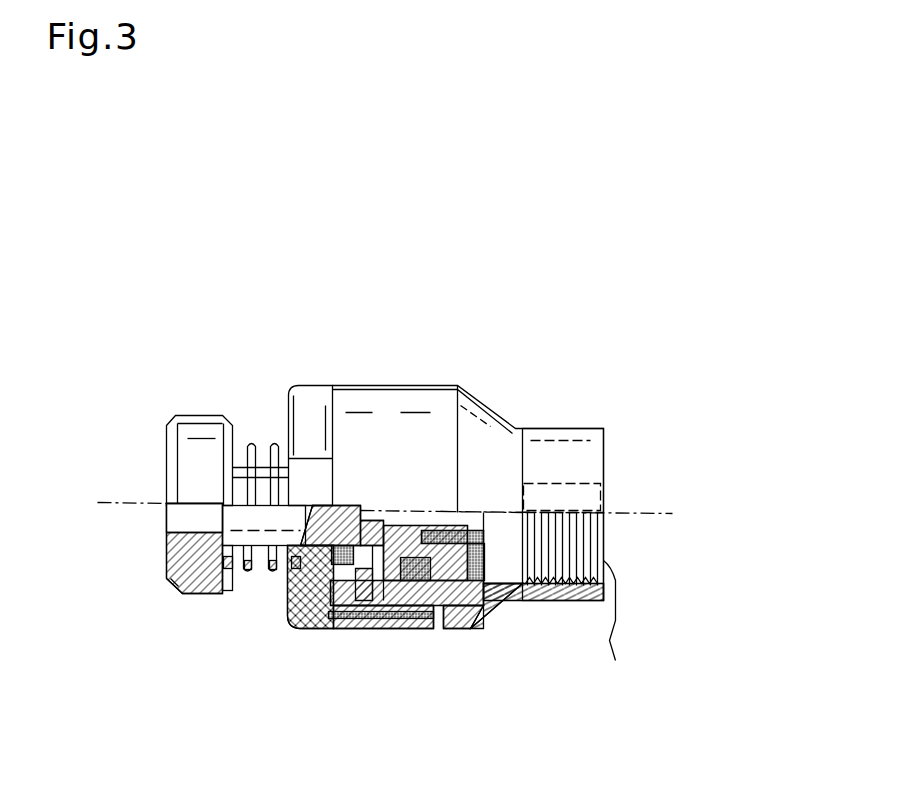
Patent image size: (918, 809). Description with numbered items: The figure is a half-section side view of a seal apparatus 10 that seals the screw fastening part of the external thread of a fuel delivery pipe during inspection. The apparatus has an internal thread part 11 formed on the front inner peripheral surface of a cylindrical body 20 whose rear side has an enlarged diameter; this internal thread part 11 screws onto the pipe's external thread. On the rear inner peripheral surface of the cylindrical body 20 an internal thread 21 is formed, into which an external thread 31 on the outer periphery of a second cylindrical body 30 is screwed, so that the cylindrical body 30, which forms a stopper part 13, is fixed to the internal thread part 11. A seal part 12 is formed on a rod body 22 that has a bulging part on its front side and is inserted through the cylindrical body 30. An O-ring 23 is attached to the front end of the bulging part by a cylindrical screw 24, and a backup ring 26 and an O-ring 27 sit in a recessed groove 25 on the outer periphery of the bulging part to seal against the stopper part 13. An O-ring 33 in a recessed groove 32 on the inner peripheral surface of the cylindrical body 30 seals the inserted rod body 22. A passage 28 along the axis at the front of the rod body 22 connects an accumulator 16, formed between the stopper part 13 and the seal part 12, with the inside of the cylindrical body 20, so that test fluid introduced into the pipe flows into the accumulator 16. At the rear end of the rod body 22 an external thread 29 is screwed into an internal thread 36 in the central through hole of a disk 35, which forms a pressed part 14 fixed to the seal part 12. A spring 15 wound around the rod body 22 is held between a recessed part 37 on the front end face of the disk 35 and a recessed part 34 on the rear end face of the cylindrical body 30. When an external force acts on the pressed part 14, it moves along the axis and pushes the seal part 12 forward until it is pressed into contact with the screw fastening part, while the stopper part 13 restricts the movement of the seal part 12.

The seal apparatus 10 is at (345, 367).
The internal thread part 11 is at (615, 660).
The seal part 12 is at (467, 623).
The stopper part 13 is at (310, 605).
The pressed part 14 is at (180, 595).
The spring 15 is at (257, 442).
The accumulator 16 is at (372, 625).
The cylindrical body 20 is at (490, 512).
The internal thread 21 is at (432, 630).
The rod body 22 is at (352, 630).
The O-ring 23 is at (505, 607).
The cylindrical screw 24 is at (483, 545).
The recessed groove 25 is at (400, 628).
The backup ring 26 is at (445, 525).
The O-ring 27 is at (415, 525).
The passage 28 is at (455, 530).
The external thread 29 is at (167, 503).
The cylindrical body 30 is at (317, 505).
The external thread 31 is at (373, 632).
The recessed groove 32 is at (300, 622).
The O-ring 33 is at (340, 545).
The recessed part 34 is at (287, 580).
The disk 35 is at (191, 465).
The internal thread 36 is at (165, 528).
The recessed part 37 is at (218, 593).